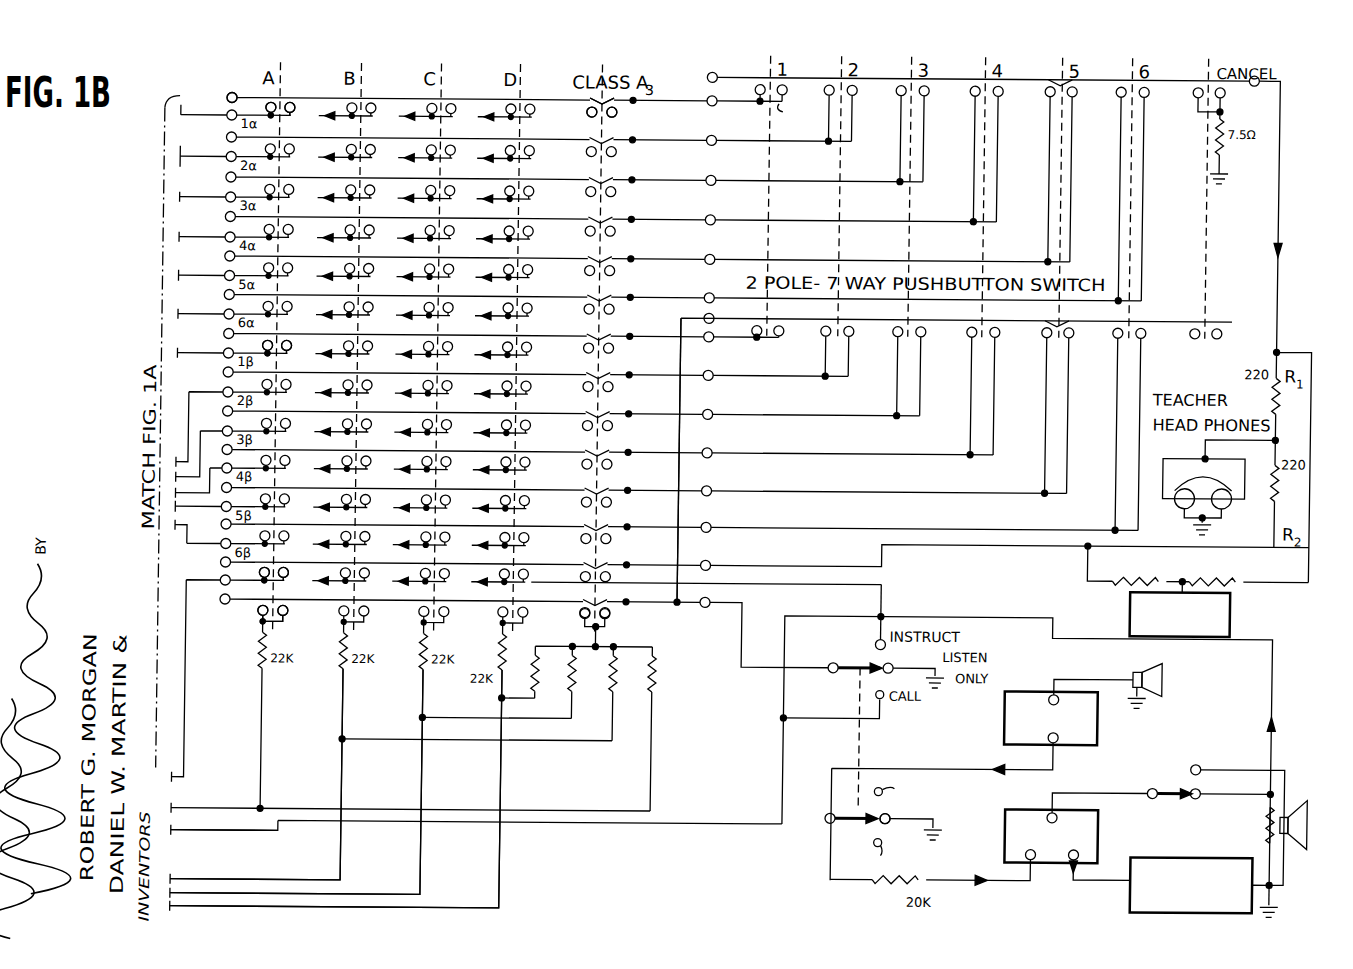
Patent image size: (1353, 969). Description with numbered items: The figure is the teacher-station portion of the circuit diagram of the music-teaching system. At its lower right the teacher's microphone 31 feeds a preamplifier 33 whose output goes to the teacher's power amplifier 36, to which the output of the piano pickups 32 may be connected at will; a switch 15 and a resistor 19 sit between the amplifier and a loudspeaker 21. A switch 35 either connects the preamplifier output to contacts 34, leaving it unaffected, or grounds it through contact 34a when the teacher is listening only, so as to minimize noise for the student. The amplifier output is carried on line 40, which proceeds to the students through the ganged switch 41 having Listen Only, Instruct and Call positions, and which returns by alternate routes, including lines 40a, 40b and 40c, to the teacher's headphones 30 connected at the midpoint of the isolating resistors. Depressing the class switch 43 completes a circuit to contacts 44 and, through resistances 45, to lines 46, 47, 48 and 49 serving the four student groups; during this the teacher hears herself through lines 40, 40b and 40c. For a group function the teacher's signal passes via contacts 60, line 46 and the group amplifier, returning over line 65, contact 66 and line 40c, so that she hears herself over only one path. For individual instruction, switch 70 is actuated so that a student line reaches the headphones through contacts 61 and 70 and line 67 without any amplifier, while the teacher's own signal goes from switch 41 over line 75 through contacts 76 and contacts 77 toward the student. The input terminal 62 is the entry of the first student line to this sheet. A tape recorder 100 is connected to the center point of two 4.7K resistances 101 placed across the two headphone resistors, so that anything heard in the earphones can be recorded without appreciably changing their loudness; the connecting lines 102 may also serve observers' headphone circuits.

The input terminal 62 is at (232, 92).
The contacts 61 is at (295, 118).
The class switch 43 is at (616, 118).
The line 67 is at (712, 70).
The switch 70 is at (783, 105).
The contacts 77 is at (292, 345).
The contacts 76 is at (780, 340).
The line 75 is at (684, 503).
The teacher's headphones 30 is at (1176, 512).
The line 40c is at (944, 540).
The connecting lines 102 is at (1088, 563).
The 4.7K resistances 101 is at (1190, 572).
The tape recorder 100 is at (1137, 612).
The line 40 is at (1007, 617).
The line 40b is at (810, 584).
The conductor 40a is at (674, 824).
The contacts 44 is at (606, 626).
The resistances 45 is at (605, 727).
The microphone 31 is at (1172, 675).
The preamplifier 33 is at (1106, 714).
The switch 41 is at (873, 690).
The contacts 34 is at (900, 825).
The contact 34a is at (900, 806).
The switch 35 is at (868, 843).
The teacher's power amplifier 36 is at (1108, 835).
The piano pickups 32 is at (1212, 856).
The switch 15 is at (1159, 782).
The loudspeaker 21 is at (1295, 823).
The resistor 19 is at (1274, 842).
The contacts 60 is at (268, 620).
The line 65 is at (193, 728).
The contact 66 is at (279, 579).
The line 46 is at (222, 830).
The line 47 is at (352, 830).
The line 48 is at (432, 845).
The line 49 is at (511, 858).